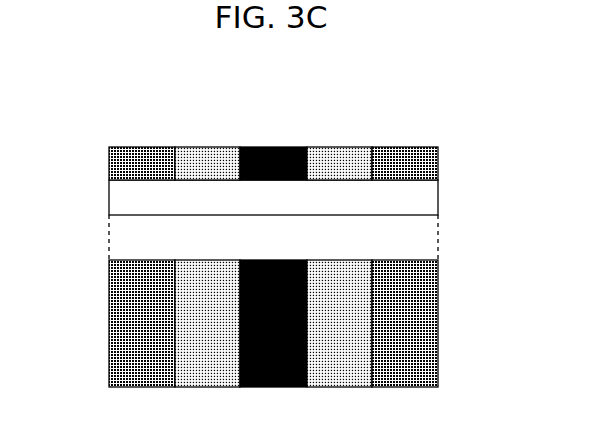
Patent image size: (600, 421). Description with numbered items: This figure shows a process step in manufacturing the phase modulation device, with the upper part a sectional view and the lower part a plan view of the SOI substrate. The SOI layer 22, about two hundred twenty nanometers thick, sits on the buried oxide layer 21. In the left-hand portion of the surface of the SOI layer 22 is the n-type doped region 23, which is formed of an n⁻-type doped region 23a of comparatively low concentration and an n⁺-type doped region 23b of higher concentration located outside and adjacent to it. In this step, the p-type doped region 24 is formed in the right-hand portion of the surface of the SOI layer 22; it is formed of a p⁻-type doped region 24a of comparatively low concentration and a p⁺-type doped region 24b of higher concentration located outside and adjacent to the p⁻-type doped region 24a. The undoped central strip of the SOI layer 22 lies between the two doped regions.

The buried oxide layer 21 is at (418, 197).
The SOI layer 22 is at (276, 162).
The n-type doped region 23 is at (174, 221).
The n⁻-type doped region 23a is at (210, 162).
The n⁺-type doped region 23b is at (145, 162).
The p-type doped region 24 is at (372, 221).
The p⁻-type doped region 24a is at (343, 162).
The p⁺-type doped region 24b is at (408, 162).